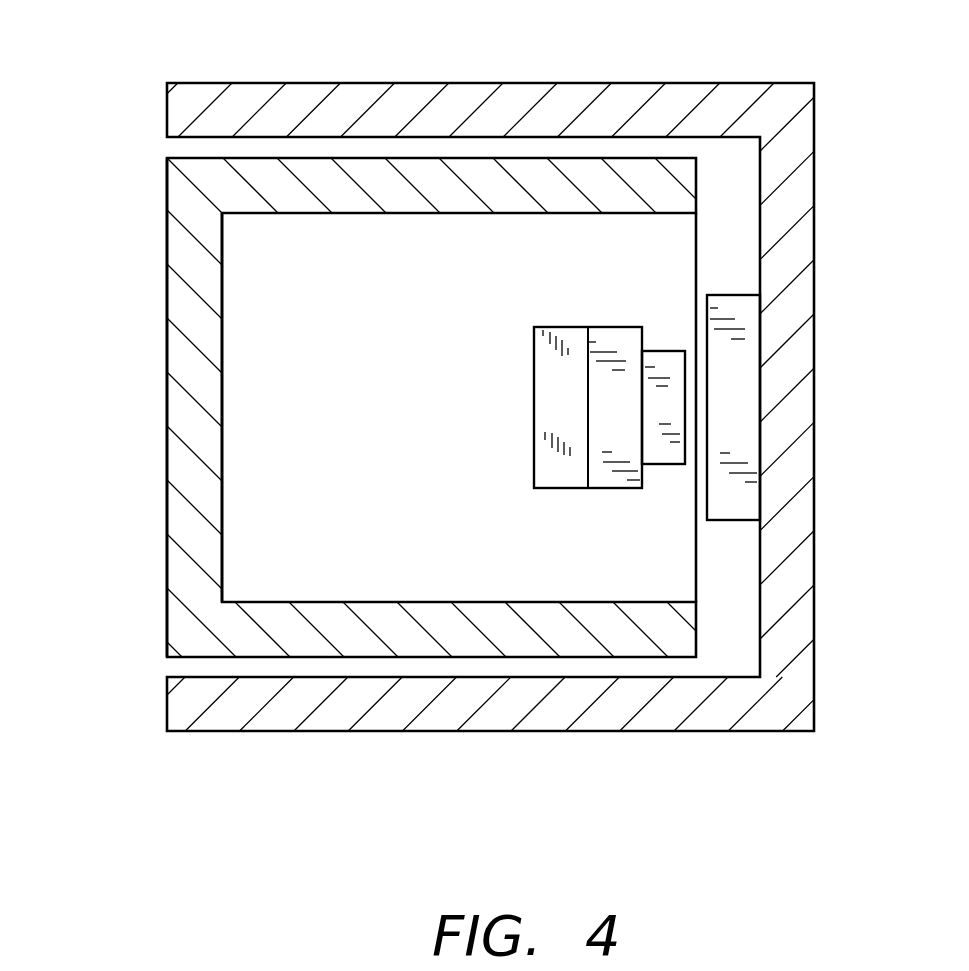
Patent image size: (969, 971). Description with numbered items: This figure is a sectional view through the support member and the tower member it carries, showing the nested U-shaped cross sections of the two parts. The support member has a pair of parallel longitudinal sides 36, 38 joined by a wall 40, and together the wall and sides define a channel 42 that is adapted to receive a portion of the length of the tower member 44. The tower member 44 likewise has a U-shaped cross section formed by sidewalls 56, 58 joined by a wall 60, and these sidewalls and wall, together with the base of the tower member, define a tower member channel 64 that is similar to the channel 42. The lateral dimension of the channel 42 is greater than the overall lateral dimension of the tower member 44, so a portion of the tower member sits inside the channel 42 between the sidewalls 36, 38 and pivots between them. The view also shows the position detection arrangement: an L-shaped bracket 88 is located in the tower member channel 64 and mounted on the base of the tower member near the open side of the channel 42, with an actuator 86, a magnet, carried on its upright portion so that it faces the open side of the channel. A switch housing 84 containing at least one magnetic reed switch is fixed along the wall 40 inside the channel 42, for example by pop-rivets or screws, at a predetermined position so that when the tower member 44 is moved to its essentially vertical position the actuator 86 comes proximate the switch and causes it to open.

The longitudinal side 36 is at (511, 100).
The longitudinal side 38 is at (490, 731).
The wall 40 is at (793, 207).
The channel 42 is at (760, 563).
The tower member 44 is at (140, 268).
The sidewall 56 is at (393, 193).
The sidewall 58 is at (343, 627).
The wall 60 is at (188, 372).
The tower member channel 64 is at (223, 417).
The switch housing 84 is at (724, 497).
The actuator 86 is at (673, 367).
The L-shaped bracket 88 is at (613, 343).